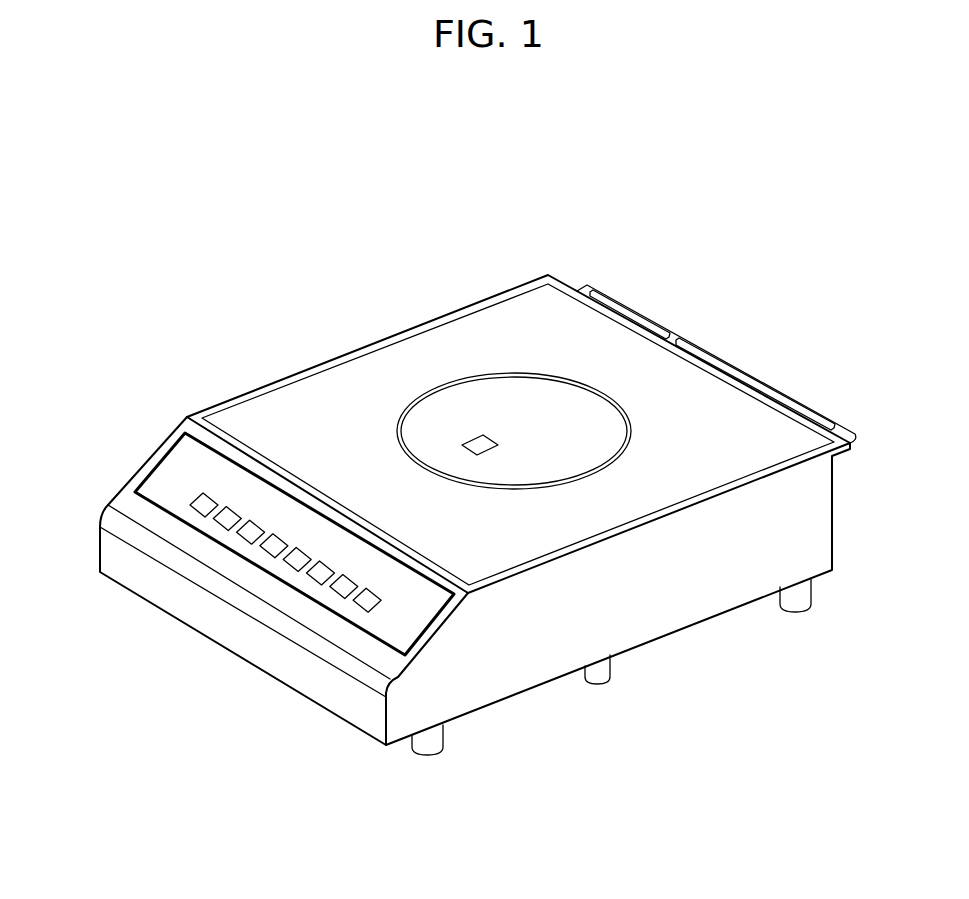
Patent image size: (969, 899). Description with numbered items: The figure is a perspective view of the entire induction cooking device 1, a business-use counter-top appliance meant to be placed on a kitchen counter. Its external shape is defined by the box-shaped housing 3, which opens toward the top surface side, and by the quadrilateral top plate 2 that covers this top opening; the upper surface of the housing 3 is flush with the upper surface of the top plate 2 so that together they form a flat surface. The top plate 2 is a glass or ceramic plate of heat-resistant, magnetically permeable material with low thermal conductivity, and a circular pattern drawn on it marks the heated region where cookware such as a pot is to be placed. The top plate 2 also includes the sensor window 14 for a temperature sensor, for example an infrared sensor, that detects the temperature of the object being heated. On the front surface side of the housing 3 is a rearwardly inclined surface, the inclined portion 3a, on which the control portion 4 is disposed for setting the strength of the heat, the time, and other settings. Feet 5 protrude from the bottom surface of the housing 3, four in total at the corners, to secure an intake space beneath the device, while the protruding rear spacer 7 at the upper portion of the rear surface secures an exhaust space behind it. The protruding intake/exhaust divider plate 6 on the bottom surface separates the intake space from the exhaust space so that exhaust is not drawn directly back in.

The induction cooking device 1 is at (613, 214).
The top plate 2 is at (720, 415).
The housing 3 is at (818, 516).
The inclined portion 3a is at (140, 507).
The control portion 4 is at (168, 473).
The feet 5 is at (800, 593).
The intake/exhaust divider plate 6 is at (605, 665).
The rear spacer 7 is at (800, 414).
The sensor window 14 is at (470, 437).